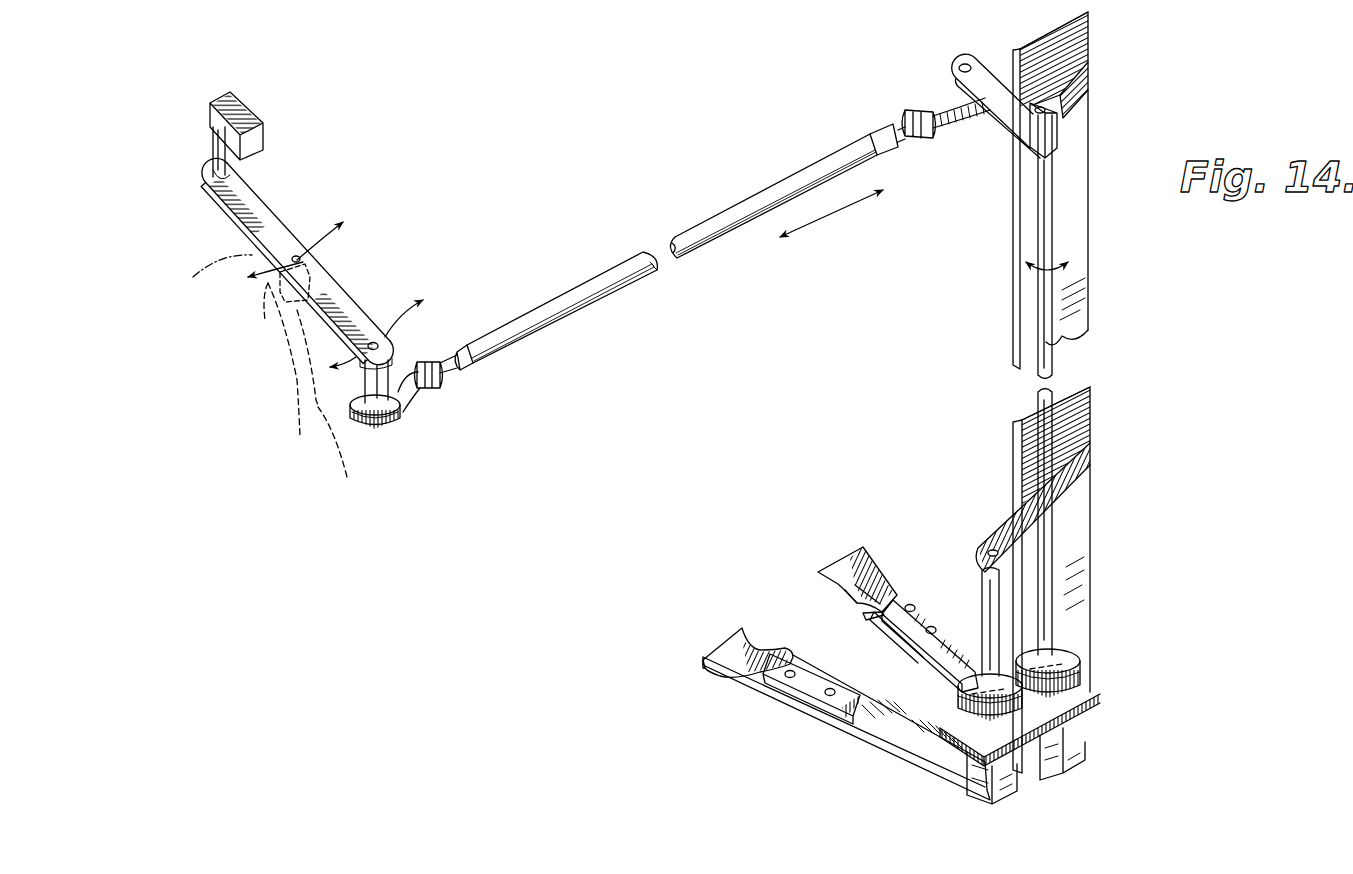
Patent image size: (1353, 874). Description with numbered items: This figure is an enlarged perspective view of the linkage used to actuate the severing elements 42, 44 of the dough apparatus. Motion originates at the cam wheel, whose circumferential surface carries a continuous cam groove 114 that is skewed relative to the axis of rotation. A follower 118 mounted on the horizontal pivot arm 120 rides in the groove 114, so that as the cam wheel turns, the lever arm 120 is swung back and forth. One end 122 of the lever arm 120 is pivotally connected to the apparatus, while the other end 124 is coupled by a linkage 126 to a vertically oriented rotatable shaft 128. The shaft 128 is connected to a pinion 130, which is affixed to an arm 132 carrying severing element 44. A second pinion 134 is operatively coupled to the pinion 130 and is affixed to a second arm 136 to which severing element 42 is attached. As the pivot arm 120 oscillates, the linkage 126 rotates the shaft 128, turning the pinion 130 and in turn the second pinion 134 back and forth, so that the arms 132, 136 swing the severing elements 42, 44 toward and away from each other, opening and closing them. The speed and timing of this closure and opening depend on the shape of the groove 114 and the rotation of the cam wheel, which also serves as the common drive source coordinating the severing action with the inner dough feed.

The severing element 42 is at (713, 670).
The severing element 44 is at (868, 553).
The cam groove 114 is at (330, 390).
The follower 118 is at (290, 265).
The pivot arm 120 is at (333, 287).
The end of lever arm 122 is at (210, 180).
The other end of lever arm 124 is at (420, 355).
The linkage 126 is at (737, 210).
The rotatable shaft 128 is at (1043, 297).
The pinion 130 is at (1078, 662).
The arm 132 is at (925, 668).
The second pinion 134 is at (960, 693).
The second arm 136 is at (872, 740).